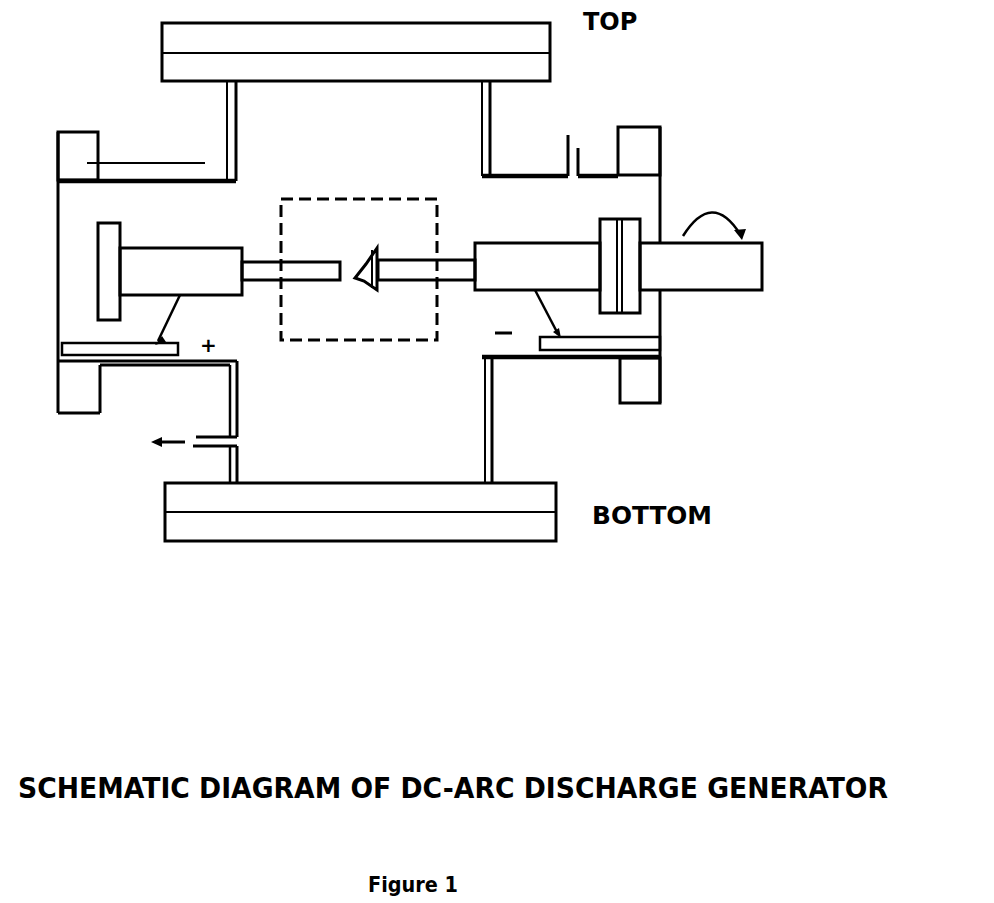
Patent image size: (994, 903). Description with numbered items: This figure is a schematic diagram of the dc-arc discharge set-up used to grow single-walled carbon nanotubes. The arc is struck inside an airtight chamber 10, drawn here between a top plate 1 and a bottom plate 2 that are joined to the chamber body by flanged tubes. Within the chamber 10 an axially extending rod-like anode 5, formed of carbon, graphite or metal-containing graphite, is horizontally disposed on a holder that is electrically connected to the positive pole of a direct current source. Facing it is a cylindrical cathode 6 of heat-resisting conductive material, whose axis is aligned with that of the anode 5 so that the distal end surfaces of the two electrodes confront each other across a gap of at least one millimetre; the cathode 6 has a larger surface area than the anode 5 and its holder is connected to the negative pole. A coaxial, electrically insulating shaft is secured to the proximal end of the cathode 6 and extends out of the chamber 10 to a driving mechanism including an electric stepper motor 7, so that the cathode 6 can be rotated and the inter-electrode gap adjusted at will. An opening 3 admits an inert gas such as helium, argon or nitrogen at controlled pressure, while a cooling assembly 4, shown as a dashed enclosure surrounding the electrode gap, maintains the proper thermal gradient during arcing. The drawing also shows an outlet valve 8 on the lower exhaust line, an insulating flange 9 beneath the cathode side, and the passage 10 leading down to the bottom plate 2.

The top plate 1 is at (375, 54).
The bottom plate 2 is at (373, 510).
The opening of an inert gas 3 is at (571, 147).
The cooling assembly 4 is at (359, 259).
The anode 5 is at (219, 284).
The cathode 6 is at (477, 290).
The electric stepper motor 7 is at (691, 262).
The outlet valve 8 is at (194, 422).
The insulating flange 9 is at (650, 380).
The chamber 10 is at (501, 420).